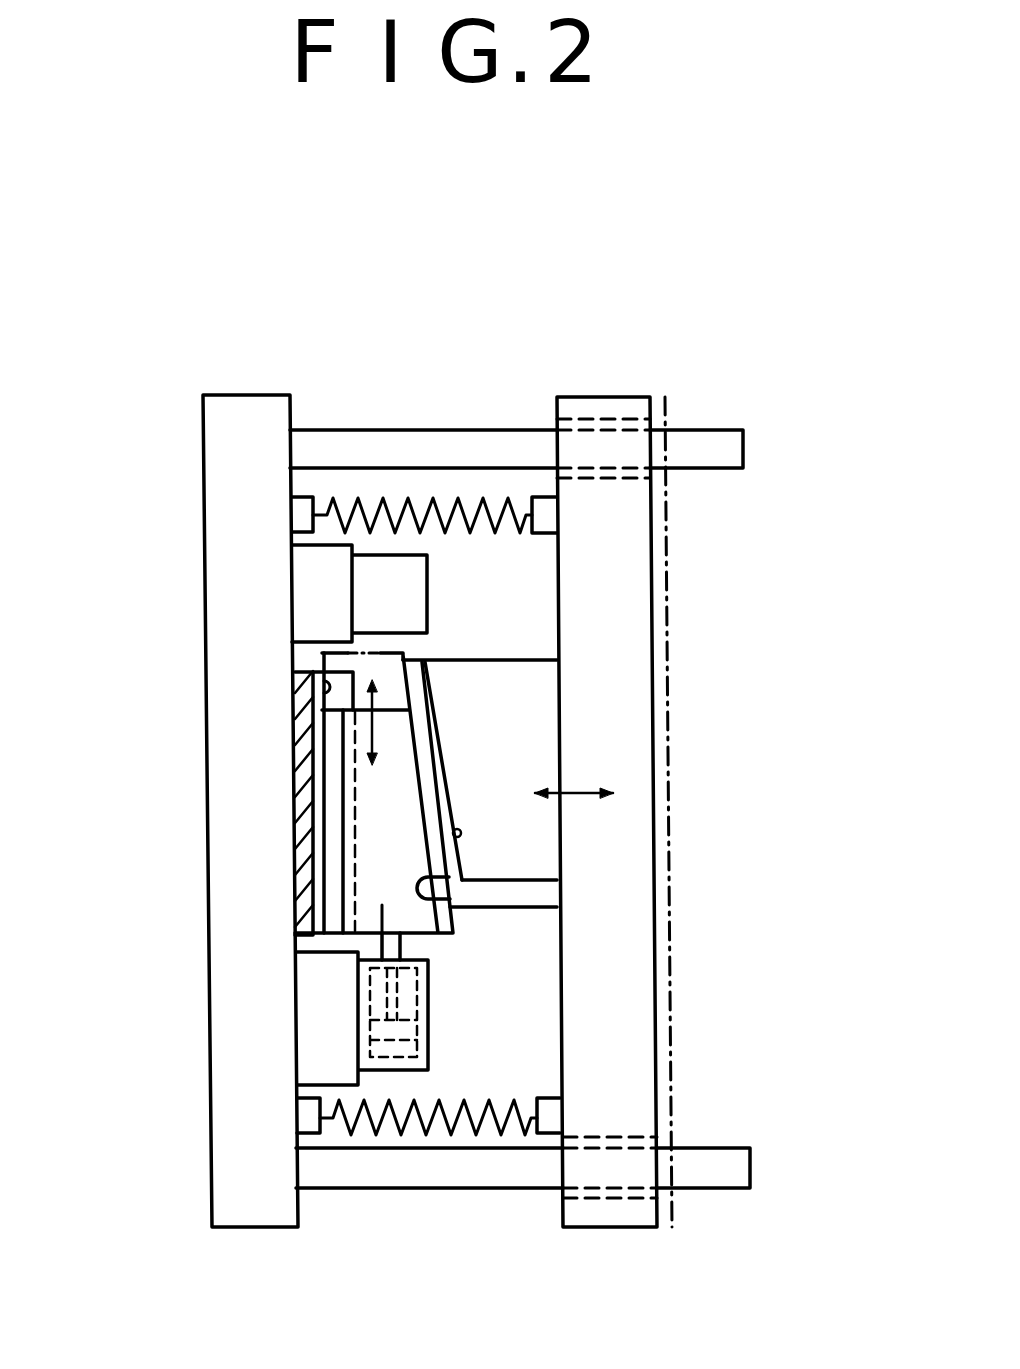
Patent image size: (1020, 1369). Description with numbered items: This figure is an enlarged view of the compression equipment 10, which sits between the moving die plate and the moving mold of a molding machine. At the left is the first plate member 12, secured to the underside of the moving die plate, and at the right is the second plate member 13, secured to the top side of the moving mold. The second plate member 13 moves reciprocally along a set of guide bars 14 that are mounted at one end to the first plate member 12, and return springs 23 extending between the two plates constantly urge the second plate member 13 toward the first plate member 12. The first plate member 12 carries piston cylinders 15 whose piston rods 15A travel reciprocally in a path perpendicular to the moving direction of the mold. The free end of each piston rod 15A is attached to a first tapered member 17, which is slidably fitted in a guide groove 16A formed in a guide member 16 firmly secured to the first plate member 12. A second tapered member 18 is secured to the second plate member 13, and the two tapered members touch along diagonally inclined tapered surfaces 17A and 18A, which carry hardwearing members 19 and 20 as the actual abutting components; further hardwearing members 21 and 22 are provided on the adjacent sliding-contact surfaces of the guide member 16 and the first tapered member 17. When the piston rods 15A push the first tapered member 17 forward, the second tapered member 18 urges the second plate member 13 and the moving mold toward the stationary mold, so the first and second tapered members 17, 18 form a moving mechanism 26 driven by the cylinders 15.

The compression equipment 10 is at (417, 327).
The first plate member 12 is at (263, 1203).
The second plate member 13 is at (608, 1212).
The guide bars 14 is at (497, 433).
The piston cylinders 15 is at (382, 583).
The piston rods 15A is at (395, 943).
The guide member 16 is at (305, 740).
The guide groove 16A is at (322, 687).
The first tapered member 17 is at (372, 880).
The tapered surface 17A is at (452, 834).
The second tapered member 18 is at (537, 847).
The tapered surface 18A is at (457, 907).
The hardwearing member 19 is at (410, 740).
The hardwearing member 20 is at (430, 760).
The hardwearing member 21 is at (322, 765).
The hardwearing member 22 is at (335, 805).
The return springs 23 is at (440, 500).
The moving mechanism 26 is at (382, 905).